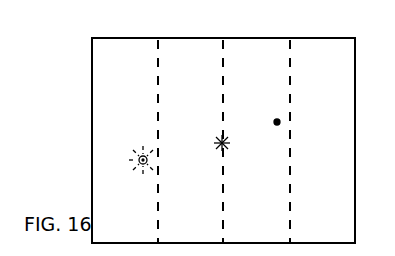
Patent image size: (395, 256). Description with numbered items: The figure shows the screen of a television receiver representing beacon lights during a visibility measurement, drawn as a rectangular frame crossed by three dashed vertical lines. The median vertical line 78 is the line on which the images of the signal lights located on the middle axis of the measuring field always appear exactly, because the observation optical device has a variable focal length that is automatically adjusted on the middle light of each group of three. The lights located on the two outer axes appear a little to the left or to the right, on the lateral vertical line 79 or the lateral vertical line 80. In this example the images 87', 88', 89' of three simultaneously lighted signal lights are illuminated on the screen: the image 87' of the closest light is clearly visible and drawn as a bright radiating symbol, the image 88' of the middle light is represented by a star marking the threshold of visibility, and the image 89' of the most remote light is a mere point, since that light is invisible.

The lateral vertical line 79 is at (158, 41).
The median vertical line 78 is at (223, 42).
The lateral vertical line 80 is at (290, 42).
The image of light 87' is at (161, 160).
The image of light 88' is at (238, 143).
The image of light 89' is at (299, 121).